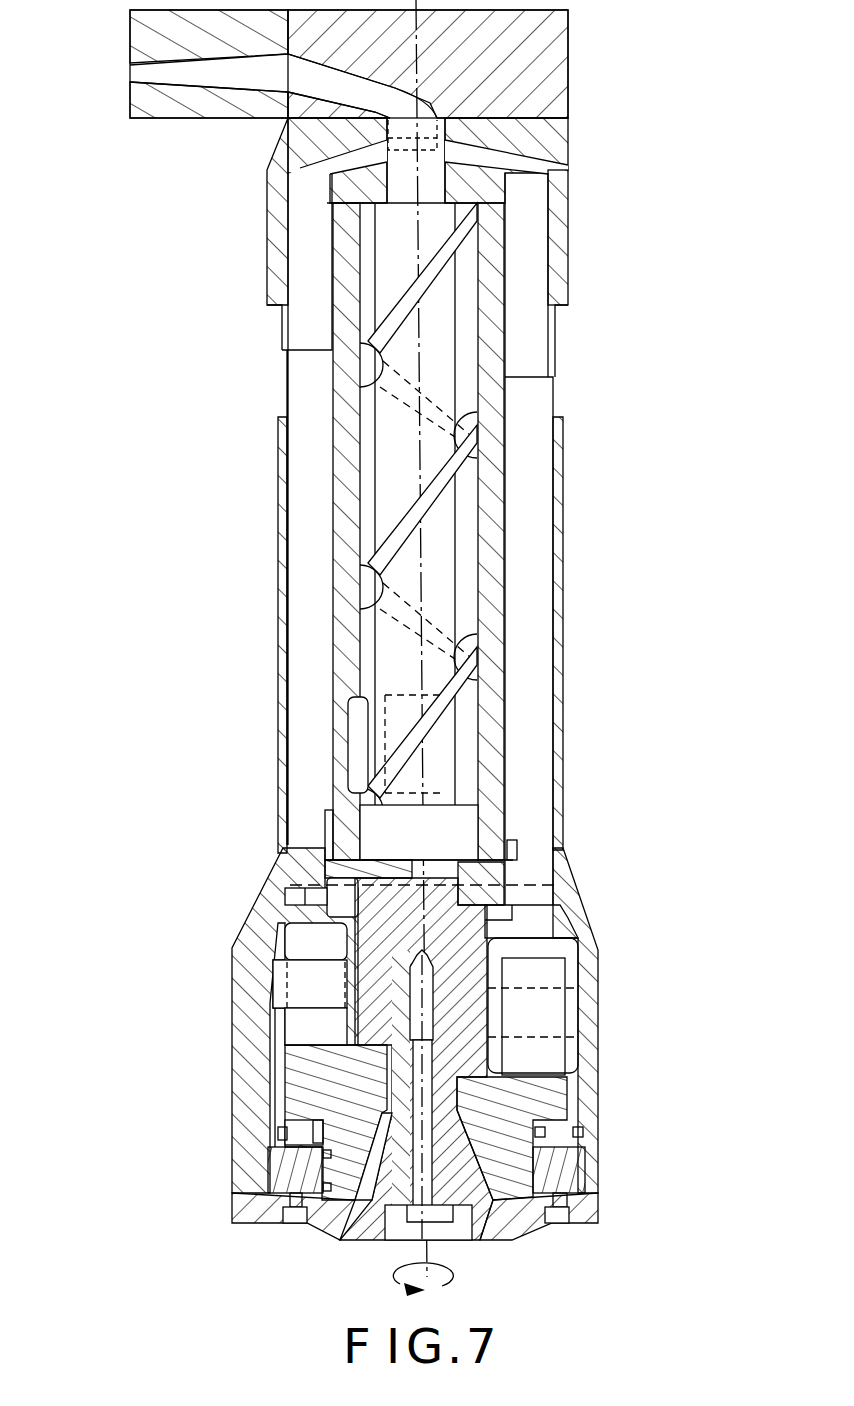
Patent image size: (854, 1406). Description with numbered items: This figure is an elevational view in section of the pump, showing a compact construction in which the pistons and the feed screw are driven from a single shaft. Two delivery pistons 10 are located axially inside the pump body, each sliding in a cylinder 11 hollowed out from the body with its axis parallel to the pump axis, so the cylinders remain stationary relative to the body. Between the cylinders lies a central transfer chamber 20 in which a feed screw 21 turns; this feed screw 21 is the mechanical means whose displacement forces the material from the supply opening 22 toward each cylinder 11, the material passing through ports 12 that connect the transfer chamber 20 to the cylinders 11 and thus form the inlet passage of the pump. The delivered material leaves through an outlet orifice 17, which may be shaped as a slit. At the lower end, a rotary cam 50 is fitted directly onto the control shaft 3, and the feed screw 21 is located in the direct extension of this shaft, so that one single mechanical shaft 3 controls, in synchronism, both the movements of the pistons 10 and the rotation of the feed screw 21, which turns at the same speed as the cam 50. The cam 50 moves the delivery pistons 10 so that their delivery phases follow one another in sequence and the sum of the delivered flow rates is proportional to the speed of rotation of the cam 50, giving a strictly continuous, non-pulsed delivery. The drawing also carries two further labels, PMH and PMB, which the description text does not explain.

The outlet orifice 17 is at (131, 71).
The cylinder 11 is at (272, 194).
The port 12 is at (342, 213).
The high pressure chamber PMH is at (313, 182).
The low pressure chamber PMB is at (493, 228).
The delivery piston 10 is at (282, 338).
The central transfer chamber 20 is at (437, 531).
The feed screw 21 is at (437, 498).
The supply opening 22 is at (372, 738).
The rotary cam 50 is at (302, 1062).
The control shaft 3 is at (380, 1072).